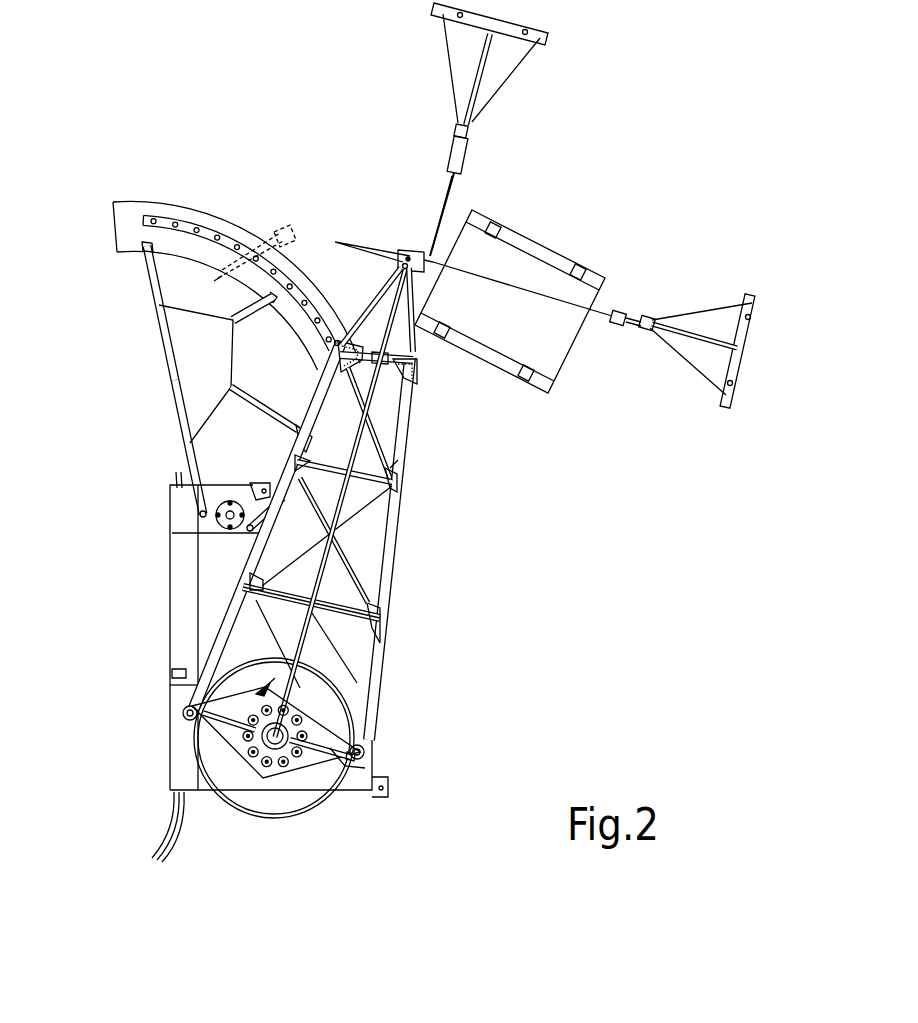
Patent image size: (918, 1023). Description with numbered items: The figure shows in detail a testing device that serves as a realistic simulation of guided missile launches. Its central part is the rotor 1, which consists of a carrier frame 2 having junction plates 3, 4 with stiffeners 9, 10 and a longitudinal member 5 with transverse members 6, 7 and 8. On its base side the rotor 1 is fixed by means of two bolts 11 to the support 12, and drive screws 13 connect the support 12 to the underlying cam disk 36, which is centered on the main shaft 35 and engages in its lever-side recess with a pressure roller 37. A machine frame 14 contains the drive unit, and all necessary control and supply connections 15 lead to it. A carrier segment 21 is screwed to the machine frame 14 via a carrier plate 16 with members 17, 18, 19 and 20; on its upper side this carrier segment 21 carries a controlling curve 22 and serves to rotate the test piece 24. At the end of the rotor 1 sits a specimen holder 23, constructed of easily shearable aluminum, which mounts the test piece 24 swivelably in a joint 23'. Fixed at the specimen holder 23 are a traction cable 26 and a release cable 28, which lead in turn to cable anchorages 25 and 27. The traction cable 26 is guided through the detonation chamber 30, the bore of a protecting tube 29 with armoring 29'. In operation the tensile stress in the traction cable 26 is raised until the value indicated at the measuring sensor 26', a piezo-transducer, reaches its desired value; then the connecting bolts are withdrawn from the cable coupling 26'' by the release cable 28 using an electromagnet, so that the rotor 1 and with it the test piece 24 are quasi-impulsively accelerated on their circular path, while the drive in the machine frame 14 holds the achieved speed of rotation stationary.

The rotor 1 is at (301, 492).
The carrier frame 2 is at (230, 632).
The junction plate 3 is at (413, 377).
The junction plate 4 is at (247, 580).
The longitudinal member 5 is at (372, 397).
The transverse member 6 is at (327, 755).
The transverse member 7 is at (377, 610).
The transverse member 8 is at (392, 477).
The stiffener 9 is at (372, 418).
The stiffener 10 is at (332, 535).
The bolt 11 is at (183, 713).
The support 12 is at (235, 742).
The drive screw 13 is at (270, 763).
The machine frame 14 is at (180, 743).
The control and supply connections 15 is at (157, 833).
The carrier plate 16 is at (185, 365).
The member 17 is at (157, 285).
The member 18 is at (227, 320).
The member 19 is at (247, 397).
The member 20 is at (188, 452).
The carrier segment 21 is at (132, 222).
The controlling curve 22 is at (213, 240).
The specimen holder 23 is at (363, 298).
The joint 23' is at (378, 277).
The test piece 24 is at (290, 228).
The cable anchorage 25 is at (737, 370).
The traction cable 26 is at (563, 278).
The measuring sensor 26' is at (619, 346).
The cable coupling 26'' is at (428, 210).
The cable anchorage 27 is at (507, 85).
The release cable 28 is at (452, 192).
The protecting tube 29 is at (543, 227).
The armoring 29' is at (614, 247).
The detonation chamber 30 is at (553, 333).
The main shaft 35 is at (303, 733).
The cam disk 36 is at (258, 685).
The pressure roller 37 is at (258, 688).